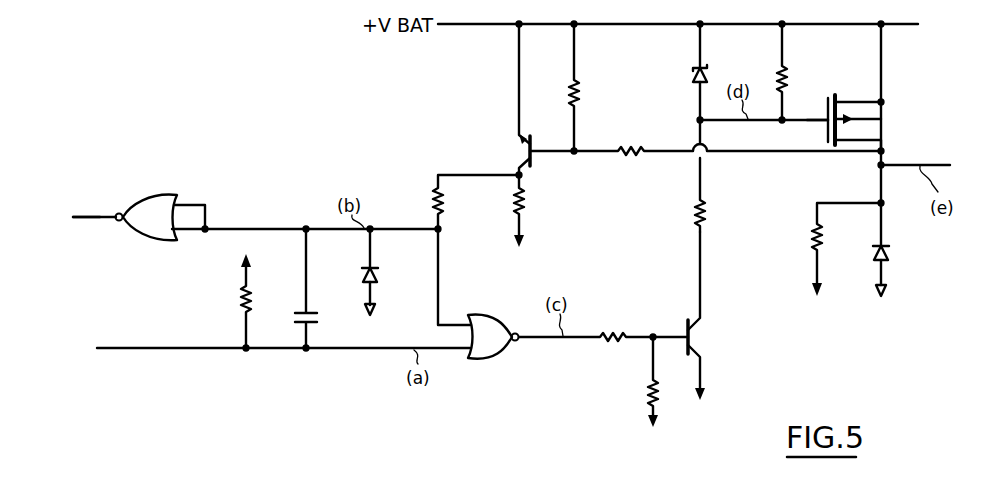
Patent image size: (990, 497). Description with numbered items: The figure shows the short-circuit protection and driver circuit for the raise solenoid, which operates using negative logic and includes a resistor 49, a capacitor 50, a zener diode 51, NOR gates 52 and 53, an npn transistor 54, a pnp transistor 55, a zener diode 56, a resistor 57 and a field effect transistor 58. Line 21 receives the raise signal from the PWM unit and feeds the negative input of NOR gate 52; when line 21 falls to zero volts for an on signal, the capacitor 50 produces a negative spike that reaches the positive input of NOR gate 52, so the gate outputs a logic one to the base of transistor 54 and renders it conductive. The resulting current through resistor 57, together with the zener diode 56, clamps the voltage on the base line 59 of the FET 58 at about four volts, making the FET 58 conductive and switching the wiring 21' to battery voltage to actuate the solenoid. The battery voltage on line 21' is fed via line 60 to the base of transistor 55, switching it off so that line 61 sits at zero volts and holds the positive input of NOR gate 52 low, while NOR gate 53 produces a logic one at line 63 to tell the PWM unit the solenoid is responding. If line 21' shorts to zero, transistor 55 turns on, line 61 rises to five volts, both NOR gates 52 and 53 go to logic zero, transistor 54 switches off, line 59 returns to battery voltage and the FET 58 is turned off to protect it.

The line 21 is at (283, 375).
The wiring 21' is at (920, 146).
The resistor 49 is at (240, 303).
The capacitor 50 is at (318, 317).
The zener diode 51 is at (378, 278).
The NOR gate 52 is at (488, 360).
The NOR gate 53 is at (158, 194).
The npn transistor 54 is at (698, 333).
The pnp transistor 55 is at (527, 150).
The zener diode 56 is at (696, 70).
The resistor 57 is at (788, 79).
The field effect transistor 58 is at (857, 108).
The base line 59 is at (807, 121).
The line 60 is at (762, 153).
The line 61 is at (454, 175).
The line 63 is at (85, 217).